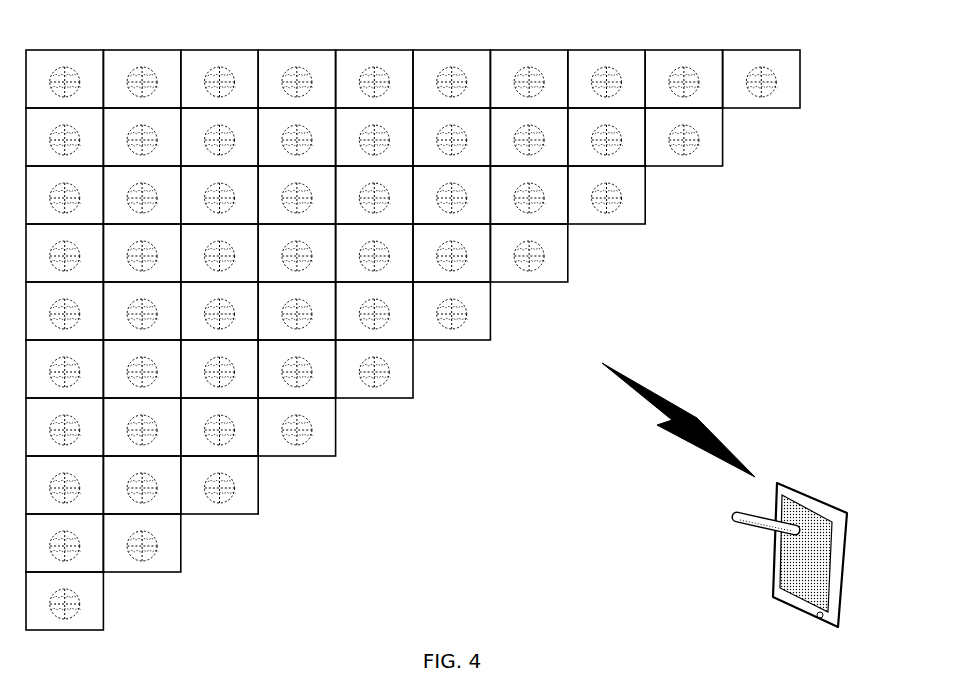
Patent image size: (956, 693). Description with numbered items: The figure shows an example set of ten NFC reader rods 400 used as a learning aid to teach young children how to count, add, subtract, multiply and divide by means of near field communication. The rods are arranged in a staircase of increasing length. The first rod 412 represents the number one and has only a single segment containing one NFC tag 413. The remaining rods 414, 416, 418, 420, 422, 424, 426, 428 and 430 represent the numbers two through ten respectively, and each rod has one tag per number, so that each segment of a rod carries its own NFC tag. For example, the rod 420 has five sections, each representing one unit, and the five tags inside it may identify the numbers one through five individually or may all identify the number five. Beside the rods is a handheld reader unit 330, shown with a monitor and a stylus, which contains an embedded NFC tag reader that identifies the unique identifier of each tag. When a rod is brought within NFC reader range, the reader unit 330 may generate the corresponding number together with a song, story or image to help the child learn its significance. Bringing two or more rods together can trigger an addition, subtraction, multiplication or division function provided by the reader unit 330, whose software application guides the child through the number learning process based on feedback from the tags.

The NFC reader rods 400 is at (59, 31).
The reader unit 330 is at (797, 485).
The first rod 412 is at (94, 619).
The NFC tag 413 is at (66, 620).
The rod 414 is at (181, 541).
The rod 416 is at (258, 483).
The rod 418 is at (336, 425).
The rod 420 is at (413, 367).
The rod 422 is at (490, 309).
The rod 424 is at (568, 251).
The rod 426 is at (645, 193).
The rod 428 is at (723, 135).
The rod 430 is at (800, 77).